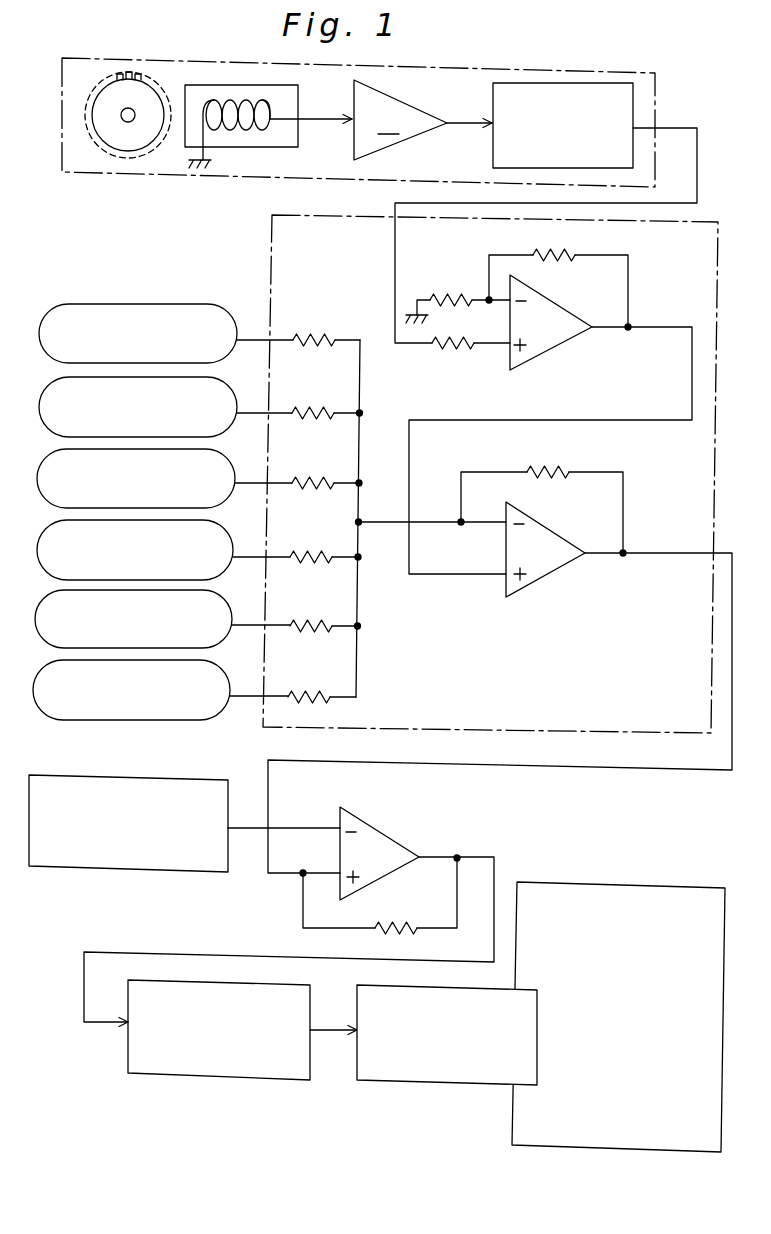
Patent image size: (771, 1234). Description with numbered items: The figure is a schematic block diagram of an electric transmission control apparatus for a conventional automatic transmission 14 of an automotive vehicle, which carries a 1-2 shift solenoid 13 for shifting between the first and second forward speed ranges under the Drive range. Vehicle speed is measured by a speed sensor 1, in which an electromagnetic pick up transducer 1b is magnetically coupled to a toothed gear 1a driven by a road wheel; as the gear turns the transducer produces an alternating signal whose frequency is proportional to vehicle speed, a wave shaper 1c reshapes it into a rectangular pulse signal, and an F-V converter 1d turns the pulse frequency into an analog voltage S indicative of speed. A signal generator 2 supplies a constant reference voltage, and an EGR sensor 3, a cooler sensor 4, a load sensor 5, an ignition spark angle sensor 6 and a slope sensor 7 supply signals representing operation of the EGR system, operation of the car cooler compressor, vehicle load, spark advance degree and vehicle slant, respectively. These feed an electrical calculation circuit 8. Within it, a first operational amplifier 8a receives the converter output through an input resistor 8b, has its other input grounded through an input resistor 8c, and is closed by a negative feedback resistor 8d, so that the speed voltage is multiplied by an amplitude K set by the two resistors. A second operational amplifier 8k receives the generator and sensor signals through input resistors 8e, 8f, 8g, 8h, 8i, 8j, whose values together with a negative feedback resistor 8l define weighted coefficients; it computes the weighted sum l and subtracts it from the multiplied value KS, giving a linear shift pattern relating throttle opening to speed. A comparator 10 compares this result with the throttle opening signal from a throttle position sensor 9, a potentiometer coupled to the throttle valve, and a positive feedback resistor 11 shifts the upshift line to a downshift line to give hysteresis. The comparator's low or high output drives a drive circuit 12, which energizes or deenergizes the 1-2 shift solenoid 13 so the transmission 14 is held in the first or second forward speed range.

The speed sensor 1 is at (470, 66).
The toothed gear 1a is at (107, 125).
The electromagnetic pick up transducer 1b is at (290, 146).
The wave shaper 1c is at (423, 120).
The F-V converter 1d is at (494, 144).
The signal generator 2 is at (231, 318).
The EGR sensor 3 is at (232, 394).
The cooler sensor 4 is at (230, 463).
The load sensor 5 is at (227, 531).
The ignition spark angle sensor 6 is at (227, 602).
The slope sensor 7 is at (226, 677).
The electrical calculation circuit 8 is at (268, 247).
The first operational amplifier 8a is at (568, 351).
The input resistor 8b is at (454, 343).
The input resistor 8c is at (452, 291).
The negative feedback resistor 8d is at (560, 256).
The input resistor 8e is at (325, 339).
The input resistor 8f is at (313, 412).
The input resistor 8g is at (316, 482).
The input resistor 8h is at (306, 556).
The input resistor 8i is at (308, 625).
The input resistor 8j is at (306, 696).
The second operational amplifier 8k is at (534, 590).
The negative feedback resistor 8l is at (558, 471).
The throttle position sensor 9 is at (208, 778).
The comparator 10 is at (392, 834).
The positive feedback resistor 11 is at (407, 921).
The drive circuit 12 is at (221, 1079).
The 1-2 shift solenoid 13 is at (420, 1085).
The automatic transmission 14 is at (601, 874).